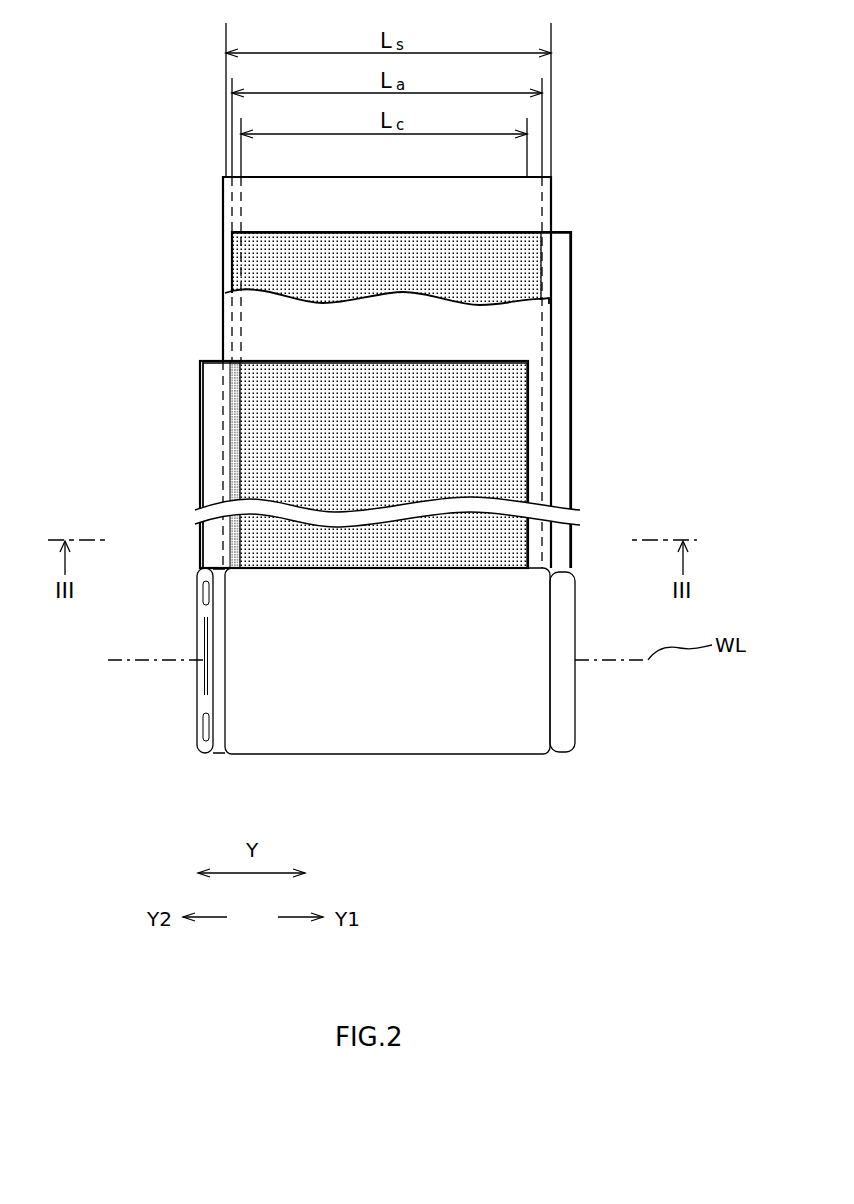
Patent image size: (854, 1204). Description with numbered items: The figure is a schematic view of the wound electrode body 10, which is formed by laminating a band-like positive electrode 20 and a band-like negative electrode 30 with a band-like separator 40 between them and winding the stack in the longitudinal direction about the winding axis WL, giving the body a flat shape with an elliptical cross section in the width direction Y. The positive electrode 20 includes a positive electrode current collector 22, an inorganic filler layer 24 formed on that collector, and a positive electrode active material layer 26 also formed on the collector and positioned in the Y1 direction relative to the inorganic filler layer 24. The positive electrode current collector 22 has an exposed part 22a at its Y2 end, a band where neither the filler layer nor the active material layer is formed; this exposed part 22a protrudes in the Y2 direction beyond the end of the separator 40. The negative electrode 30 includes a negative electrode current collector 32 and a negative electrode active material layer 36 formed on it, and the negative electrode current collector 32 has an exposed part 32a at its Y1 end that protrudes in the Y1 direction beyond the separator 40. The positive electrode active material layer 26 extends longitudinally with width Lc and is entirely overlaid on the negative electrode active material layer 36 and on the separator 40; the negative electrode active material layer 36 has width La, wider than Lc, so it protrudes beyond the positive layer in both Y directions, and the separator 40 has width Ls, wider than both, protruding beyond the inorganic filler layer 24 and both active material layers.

The wound electrode body 10 is at (447, 734).
The positive electrode 20 is at (198, 430).
The positive electrode current collector 22 is at (200, 492).
The exposed part of the positive electrode current collector 22a is at (212, 452).
The inorganic filler layer 24 is at (232, 550).
The positive electrode active material layer 26 is at (260, 390).
The negative electrode 30 is at (573, 307).
The negative electrode current collector 32 is at (571, 405).
The exposed part of the negative electrode current collector 32a is at (560, 363).
The negative electrode active material layer 36 is at (527, 258).
The separator 40 is at (241, 196).